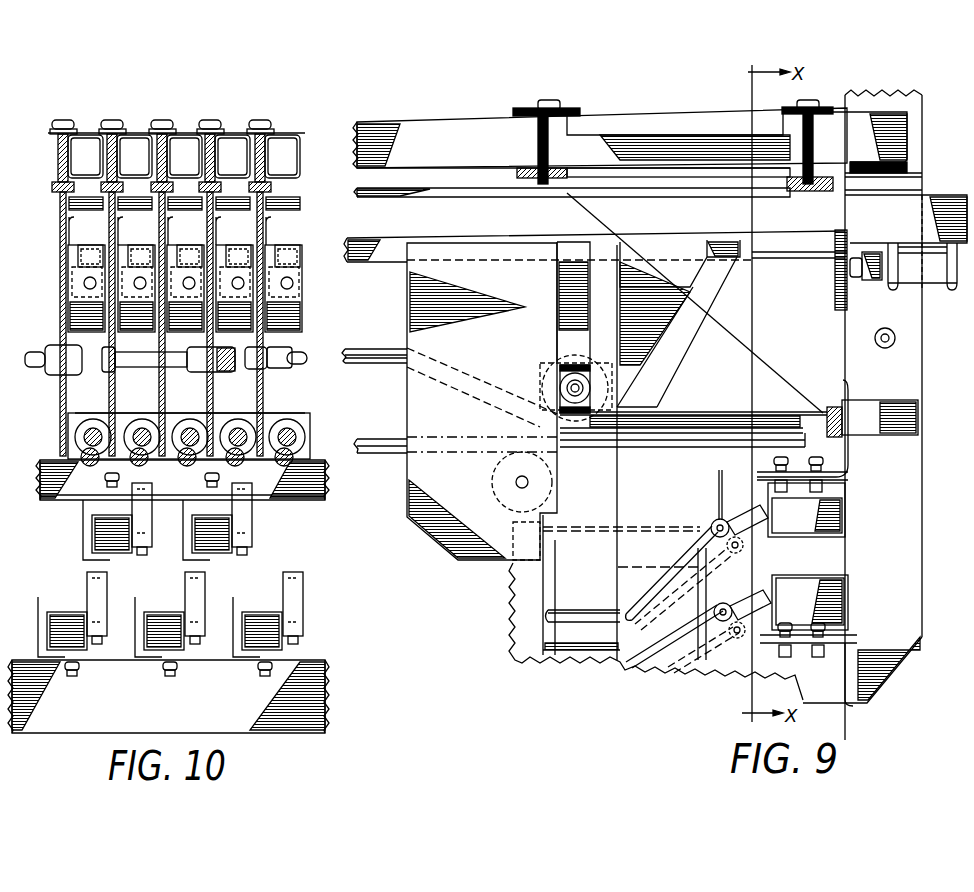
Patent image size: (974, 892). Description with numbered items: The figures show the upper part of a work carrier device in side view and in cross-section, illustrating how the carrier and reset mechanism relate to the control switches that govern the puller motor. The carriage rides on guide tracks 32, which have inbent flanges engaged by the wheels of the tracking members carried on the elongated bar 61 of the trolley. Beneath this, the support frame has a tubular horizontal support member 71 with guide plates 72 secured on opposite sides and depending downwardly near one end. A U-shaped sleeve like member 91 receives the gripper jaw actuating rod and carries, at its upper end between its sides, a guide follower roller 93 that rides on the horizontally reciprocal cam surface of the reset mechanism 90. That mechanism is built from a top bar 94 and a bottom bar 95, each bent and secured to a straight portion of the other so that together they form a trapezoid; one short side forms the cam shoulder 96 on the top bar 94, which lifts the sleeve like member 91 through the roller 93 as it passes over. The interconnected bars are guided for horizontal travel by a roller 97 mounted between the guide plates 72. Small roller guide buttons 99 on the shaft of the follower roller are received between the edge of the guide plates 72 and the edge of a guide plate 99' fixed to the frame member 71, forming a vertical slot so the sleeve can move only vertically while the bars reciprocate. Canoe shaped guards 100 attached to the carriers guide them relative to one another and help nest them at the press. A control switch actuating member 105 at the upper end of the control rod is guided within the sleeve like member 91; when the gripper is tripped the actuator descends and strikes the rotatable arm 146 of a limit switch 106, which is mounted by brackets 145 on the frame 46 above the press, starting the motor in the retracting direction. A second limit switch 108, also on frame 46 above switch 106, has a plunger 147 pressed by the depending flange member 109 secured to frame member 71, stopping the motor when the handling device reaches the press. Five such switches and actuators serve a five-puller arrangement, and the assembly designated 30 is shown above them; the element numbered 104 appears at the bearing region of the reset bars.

In FIG. 10, the printing head assembly 30 is at (134, 110).
In FIG. 9, the printing head assembly 30 is at (453, 100).
In FIG. 10, the guide tracks 32 is at (131, 128).
In FIG. 9, the guide tracks 32 is at (380, 176).
In FIG. 9, the frame 46 is at (912, 480).
In FIG. 9, the elongated bar 61 is at (455, 192).
In FIG. 9, the horizontal support member 71 is at (398, 238).
In FIG. 9, the guide plates 72 is at (445, 556).
In FIG. 9, the reset mechanism 90 is at (390, 462).
In FIG. 9, the sleeve like member 91 is at (610, 486).
In FIG. 9, the guide follower roller 93 is at (577, 365).
In FIG. 10, the top bar 94 is at (88, 437).
In FIG. 9, the top bar 94 is at (665, 418).
In FIG. 10, the bottom bar 95 is at (83, 462).
In FIG. 9, the bottom bar 95 is at (692, 452).
In FIG. 9, the cam shoulder 96 is at (450, 372).
In FIG. 9, the roller 97 is at (497, 492).
In FIG. 9, the roller guide buttons 99 is at (592, 382).
In FIG. 9, the guide plate 99' is at (695, 303).
In FIG. 9, the canoe shaped guards 100 is at (557, 655).
In FIG. 10, the roller bearing 104 is at (190, 420).
In FIG. 9, the roller bearing 104 is at (905, 400).
In FIG. 10, the control switch actuating member 105 is at (147, 510).
In FIG. 9, the control switch actuating member 105 is at (648, 528).
In FIG. 10, the limit switch 106 is at (107, 557).
In FIG. 9, the limit switch 106 is at (790, 530).
In FIG. 10, the limit switch 108 is at (110, 290).
In FIG. 9, the limit switch 108 is at (938, 278).
In FIG. 10, the depending flange member 109 is at (183, 332).
In FIG. 9, the depending flange member 109 is at (835, 268).
In FIG. 9, the brackets 145 is at (845, 468).
In FIG. 9, the rotatable arm 146 is at (735, 520).
In FIG. 9, the plunger 147 is at (855, 268).